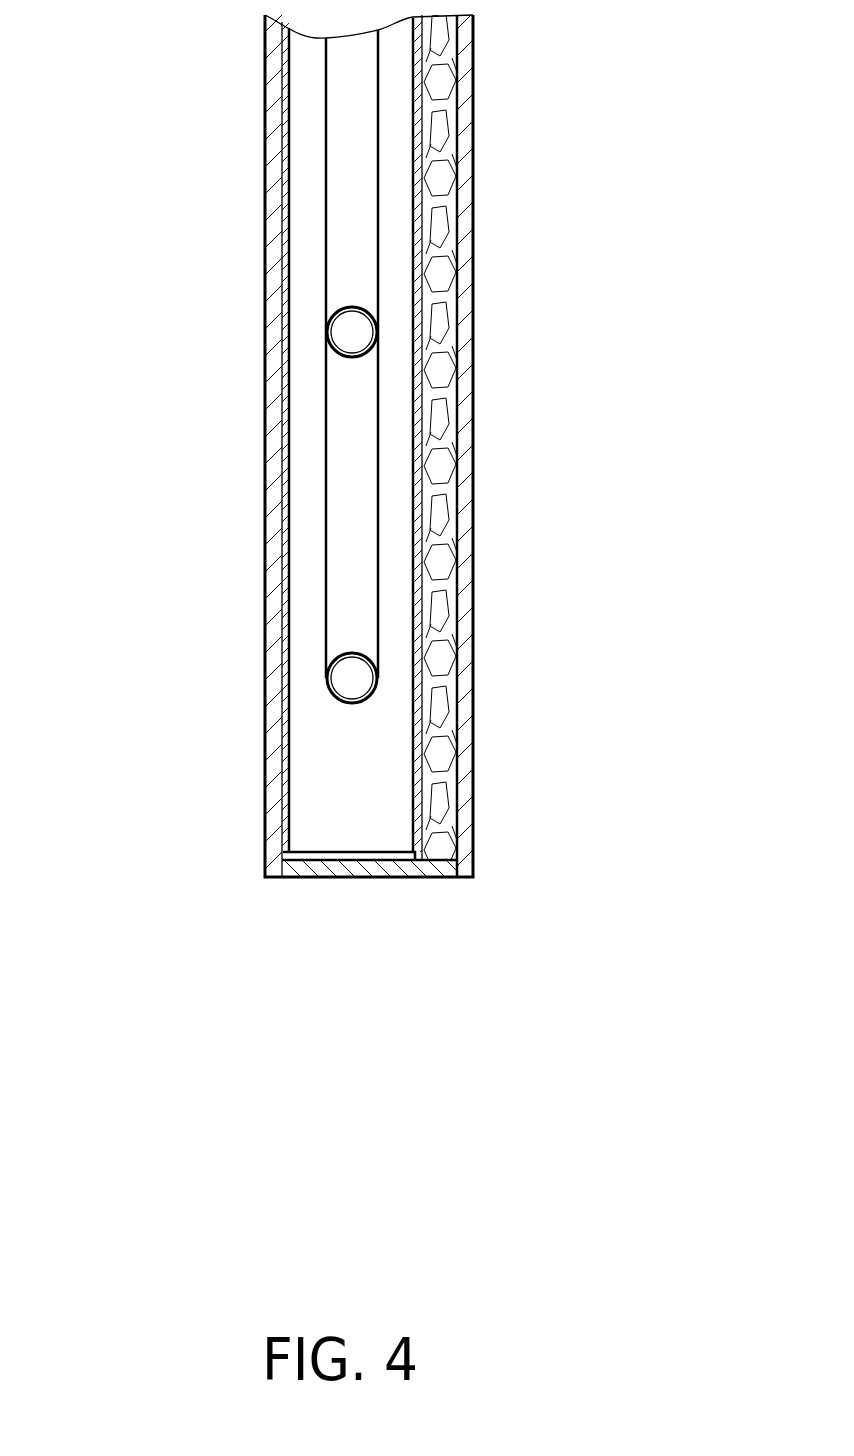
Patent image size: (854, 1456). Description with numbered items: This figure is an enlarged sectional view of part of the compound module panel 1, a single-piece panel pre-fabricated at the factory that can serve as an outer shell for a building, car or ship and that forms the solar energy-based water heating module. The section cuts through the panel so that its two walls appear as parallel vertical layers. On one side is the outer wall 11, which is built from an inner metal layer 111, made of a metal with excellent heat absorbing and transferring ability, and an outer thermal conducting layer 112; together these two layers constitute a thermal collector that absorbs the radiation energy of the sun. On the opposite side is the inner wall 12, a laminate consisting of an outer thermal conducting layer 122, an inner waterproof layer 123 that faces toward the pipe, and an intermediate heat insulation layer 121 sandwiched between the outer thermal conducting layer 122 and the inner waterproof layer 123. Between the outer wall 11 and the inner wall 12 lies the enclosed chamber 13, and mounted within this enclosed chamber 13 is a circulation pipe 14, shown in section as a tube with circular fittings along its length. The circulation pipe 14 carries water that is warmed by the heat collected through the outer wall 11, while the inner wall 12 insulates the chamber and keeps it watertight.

The compound module panel 1 is at (480, 180).
The outer wall 11 is at (177, 446).
The inner metal layer 111 is at (287, 385).
The outer thermal conducting layer 112 is at (273, 300).
The inner wall 12 is at (548, 445).
The intermediate heat insulation layer 121 is at (442, 375).
The outer thermal conducting layer 122 is at (466, 500).
The inner waterproof layer 123 is at (425, 586).
The enclosed chamber 13 is at (398, 735).
The circulation pipe 14 is at (350, 105).